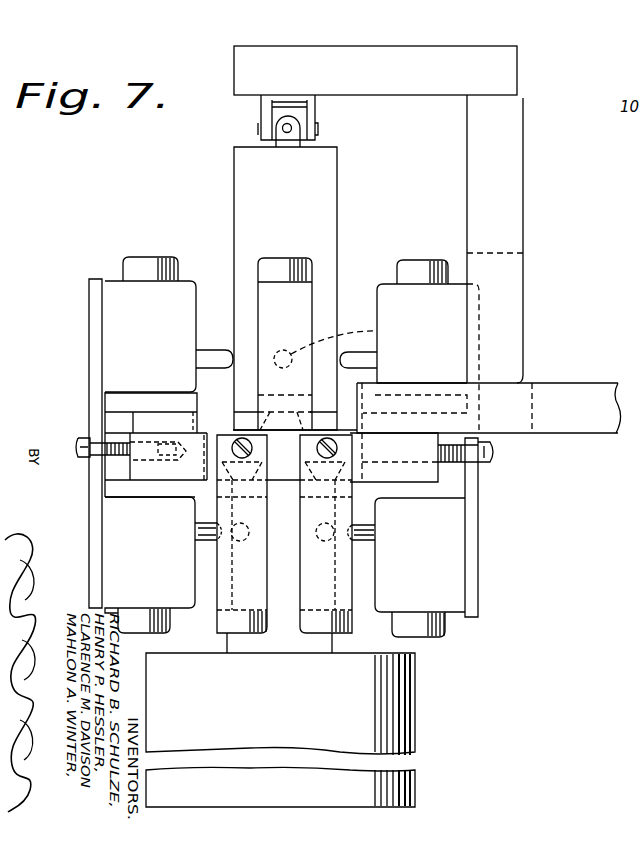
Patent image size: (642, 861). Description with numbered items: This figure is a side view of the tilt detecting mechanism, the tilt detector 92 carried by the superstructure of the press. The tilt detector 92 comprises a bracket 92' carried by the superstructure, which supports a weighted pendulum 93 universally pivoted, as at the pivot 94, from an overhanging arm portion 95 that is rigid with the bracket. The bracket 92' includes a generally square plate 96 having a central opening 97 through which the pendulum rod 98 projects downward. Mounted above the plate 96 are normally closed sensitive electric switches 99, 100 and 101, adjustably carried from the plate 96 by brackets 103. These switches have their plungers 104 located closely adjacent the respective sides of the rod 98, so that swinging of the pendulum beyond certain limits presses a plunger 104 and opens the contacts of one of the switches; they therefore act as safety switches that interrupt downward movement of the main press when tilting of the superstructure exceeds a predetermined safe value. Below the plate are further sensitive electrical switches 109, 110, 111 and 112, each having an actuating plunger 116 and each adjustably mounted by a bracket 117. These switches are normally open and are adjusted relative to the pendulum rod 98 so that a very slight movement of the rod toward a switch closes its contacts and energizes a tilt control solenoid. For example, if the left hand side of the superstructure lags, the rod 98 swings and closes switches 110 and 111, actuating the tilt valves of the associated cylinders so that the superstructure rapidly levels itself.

The tilt detector 92 is at (524, 262).
The bracket 92' is at (489, 419).
The weighted pendulum 93 is at (400, 698).
The universal pivot 94 is at (262, 128).
The overhanging arm portion 95 is at (440, 58).
The square plate 96 is at (413, 477).
The central opening 97 is at (206, 430).
The pendulum rod 98 is at (313, 205).
The sensitive electric switch 99 is at (140, 286).
The sensitive electric switch 100 is at (300, 248).
The sensitive electric switch 101 is at (413, 296).
The bracket 103 is at (313, 290).
The plunger 104 is at (200, 357).
The sensitive electrical switch 109 is at (150, 565).
The sensitive electrical switch 110 is at (223, 626).
The sensitive electrical switch 111 is at (350, 630).
The sensitive electrical switch 112 is at (420, 567).
The actuating plunger 116 is at (205, 526).
The bracket 117 is at (90, 538).